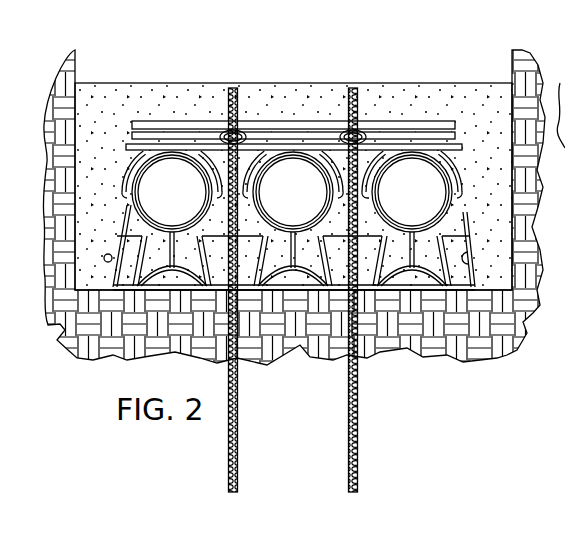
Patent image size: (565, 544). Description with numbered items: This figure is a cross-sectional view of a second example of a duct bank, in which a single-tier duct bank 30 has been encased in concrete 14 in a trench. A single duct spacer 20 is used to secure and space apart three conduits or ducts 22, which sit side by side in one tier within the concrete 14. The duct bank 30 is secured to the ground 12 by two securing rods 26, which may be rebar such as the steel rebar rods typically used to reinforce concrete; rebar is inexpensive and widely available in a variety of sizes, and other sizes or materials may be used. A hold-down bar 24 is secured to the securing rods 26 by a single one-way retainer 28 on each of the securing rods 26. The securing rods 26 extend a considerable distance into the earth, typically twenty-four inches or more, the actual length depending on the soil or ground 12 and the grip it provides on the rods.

The ground 12 is at (43, 308).
The concrete 14 is at (103, 90).
The duct spacer 20 is at (466, 292).
The conduits or ducts 22 is at (185, 209).
The hold-down bar 24 is at (386, 122).
The securing rods 26 is at (350, 492).
The one-way retainer 28 is at (351, 135).
The single-tier duct bank 30 is at (301, 263).